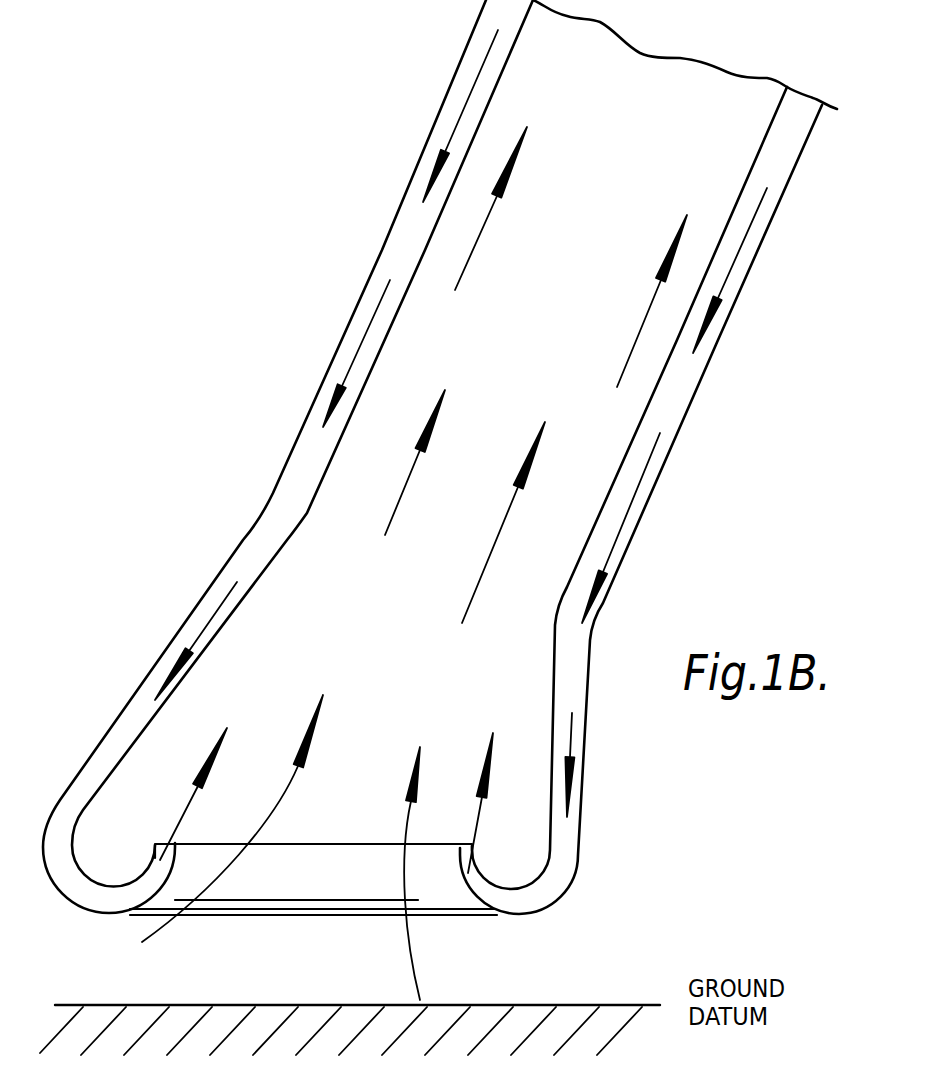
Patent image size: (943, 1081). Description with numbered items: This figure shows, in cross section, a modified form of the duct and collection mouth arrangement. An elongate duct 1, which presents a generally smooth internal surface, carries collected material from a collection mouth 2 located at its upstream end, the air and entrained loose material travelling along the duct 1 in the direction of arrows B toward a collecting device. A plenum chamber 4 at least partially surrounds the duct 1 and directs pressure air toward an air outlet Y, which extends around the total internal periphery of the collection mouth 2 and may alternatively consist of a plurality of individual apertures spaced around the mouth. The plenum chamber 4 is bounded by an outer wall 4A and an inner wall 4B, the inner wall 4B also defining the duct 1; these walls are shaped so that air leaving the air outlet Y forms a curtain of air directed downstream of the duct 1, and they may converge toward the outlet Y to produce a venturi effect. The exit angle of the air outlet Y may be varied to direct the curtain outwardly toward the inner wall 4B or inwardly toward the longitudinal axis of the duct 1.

The duct 1 is at (620, 130).
The collection mouth 2 is at (318, 893).
The plenum chamber 4 is at (466, 457).
The outer wall of the plenum chamber 4A is at (405, 197).
The inner wall of the plenum chamber 4B is at (498, 72).
The direction of air flow along the duct B is at (528, 393).
The air outlet Y is at (145, 880).